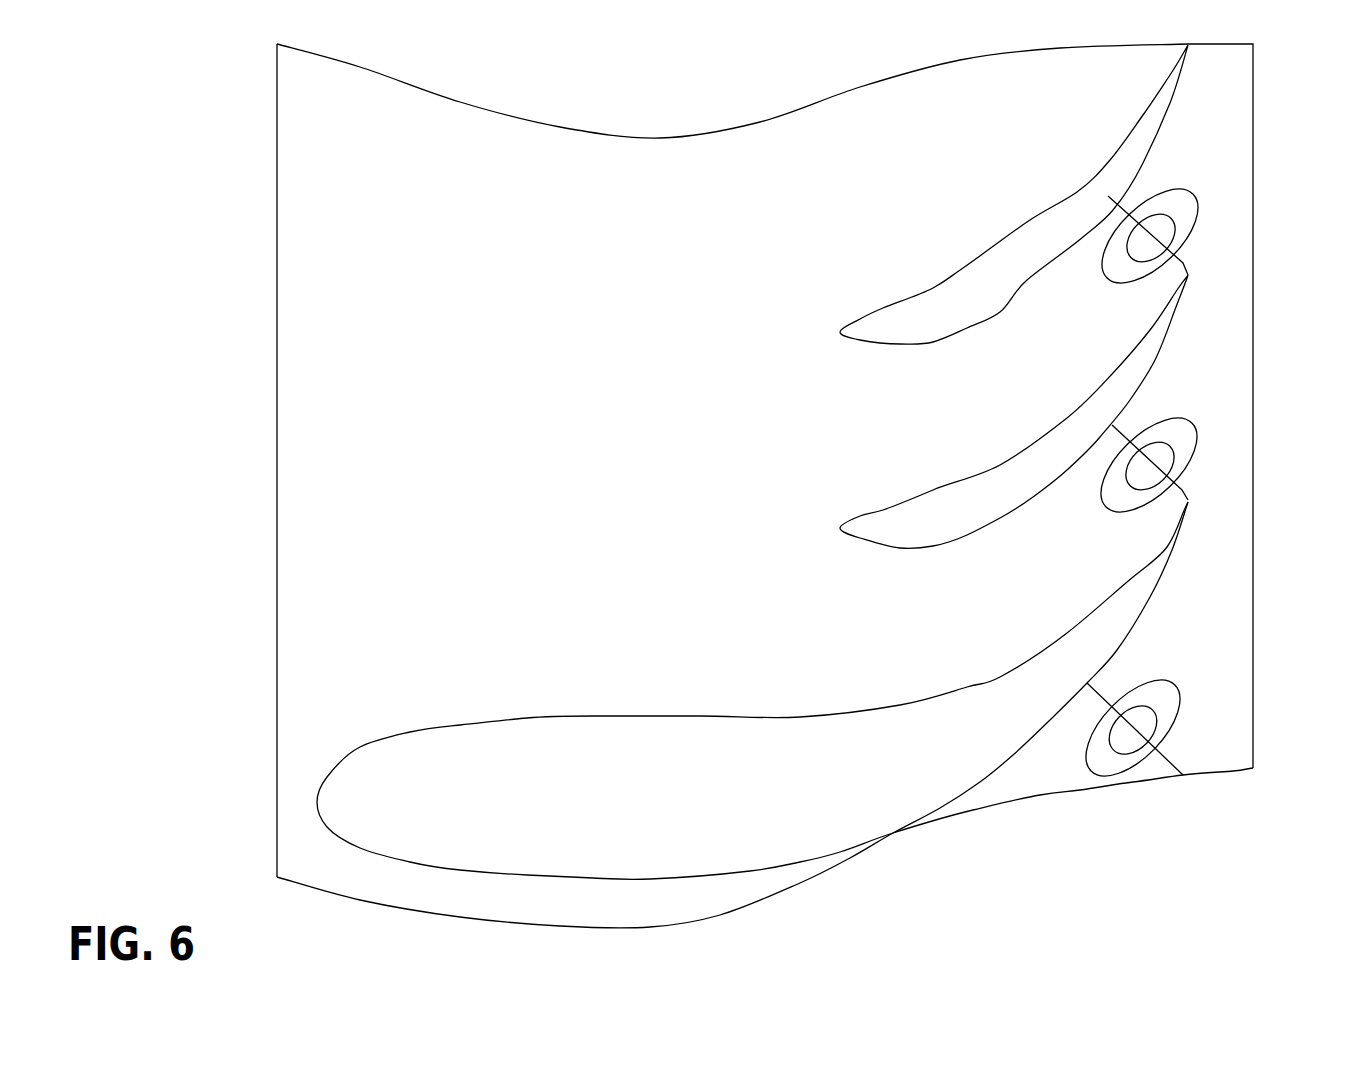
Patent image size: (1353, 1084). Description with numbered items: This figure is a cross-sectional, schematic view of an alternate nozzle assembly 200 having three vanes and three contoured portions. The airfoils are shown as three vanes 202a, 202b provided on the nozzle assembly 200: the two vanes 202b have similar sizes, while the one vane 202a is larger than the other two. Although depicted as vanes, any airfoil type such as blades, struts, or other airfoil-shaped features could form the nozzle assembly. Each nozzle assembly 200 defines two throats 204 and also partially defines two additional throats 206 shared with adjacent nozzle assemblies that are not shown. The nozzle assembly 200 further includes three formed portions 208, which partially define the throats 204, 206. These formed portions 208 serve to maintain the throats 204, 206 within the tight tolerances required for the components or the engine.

The nozzle assembly 200 is at (200, 92).
The vane 202a is at (545, 760).
The vane 202b is at (912, 318).
The throat 204 is at (1183, 263).
The additional throat 206 is at (1175, 757).
The formed portion 208 is at (1125, 227).